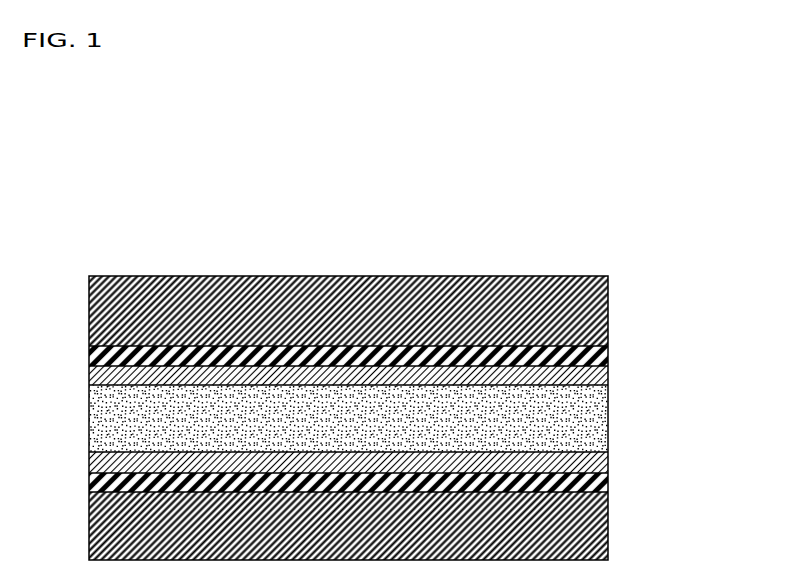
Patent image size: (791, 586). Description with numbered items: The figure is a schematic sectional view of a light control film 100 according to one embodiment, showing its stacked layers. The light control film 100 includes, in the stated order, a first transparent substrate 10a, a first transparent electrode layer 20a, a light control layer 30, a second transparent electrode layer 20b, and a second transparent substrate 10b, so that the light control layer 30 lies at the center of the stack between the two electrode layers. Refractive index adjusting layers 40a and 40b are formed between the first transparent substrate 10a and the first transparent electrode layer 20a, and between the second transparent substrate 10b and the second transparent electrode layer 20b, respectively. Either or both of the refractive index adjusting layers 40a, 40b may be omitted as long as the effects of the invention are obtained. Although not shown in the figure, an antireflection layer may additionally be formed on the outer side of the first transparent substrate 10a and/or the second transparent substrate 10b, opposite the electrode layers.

The light control film 100 is at (657, 198).
The first transparent substrate 10a is at (608, 318).
The second transparent substrate 10b is at (608, 530).
The refractive index adjusting layer 40a is at (608, 353).
The refractive index adjusting layer 40b is at (608, 485).
The first transparent electrode layer 20a is at (608, 377).
The second transparent electrode layer 20b is at (608, 463).
The light control layer 30 is at (608, 417).